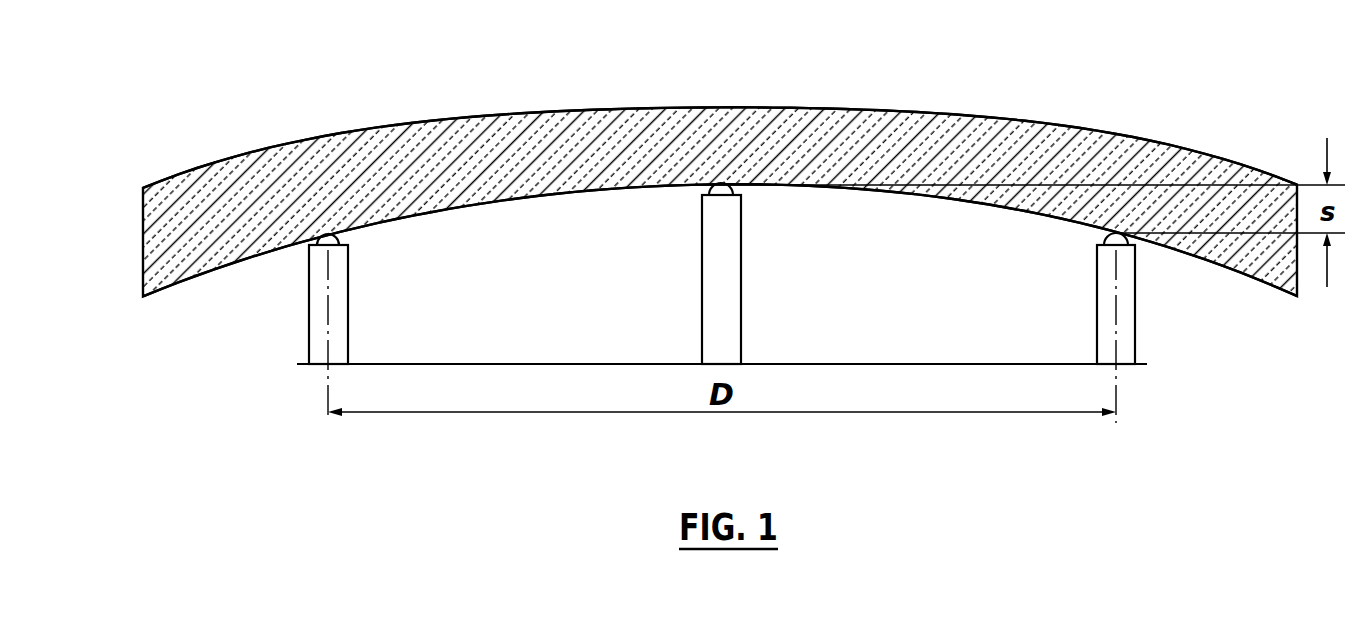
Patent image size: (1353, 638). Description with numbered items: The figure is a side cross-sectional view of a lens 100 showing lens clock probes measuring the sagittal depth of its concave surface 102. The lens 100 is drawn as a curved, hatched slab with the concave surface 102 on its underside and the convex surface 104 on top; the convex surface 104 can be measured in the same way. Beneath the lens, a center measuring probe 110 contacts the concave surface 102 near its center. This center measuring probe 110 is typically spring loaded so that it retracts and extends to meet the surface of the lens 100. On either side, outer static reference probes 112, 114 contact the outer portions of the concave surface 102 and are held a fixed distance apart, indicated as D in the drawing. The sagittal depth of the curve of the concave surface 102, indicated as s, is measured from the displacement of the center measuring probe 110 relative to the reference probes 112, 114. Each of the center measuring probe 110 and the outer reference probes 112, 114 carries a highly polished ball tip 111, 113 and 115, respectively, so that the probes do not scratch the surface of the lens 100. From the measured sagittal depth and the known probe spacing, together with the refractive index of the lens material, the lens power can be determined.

The lens 100 is at (143, 207).
The concave surface 102 is at (230, 262).
The convex surface 104 is at (267, 148).
The center measuring probe 110 is at (702, 250).
The ball tip 111 is at (708, 188).
The outer static reference probe 112 is at (309, 335).
The ball tip 113 is at (340, 236).
The outer static reference probe 114 is at (1135, 301).
The ball tip 115 is at (1103, 239).